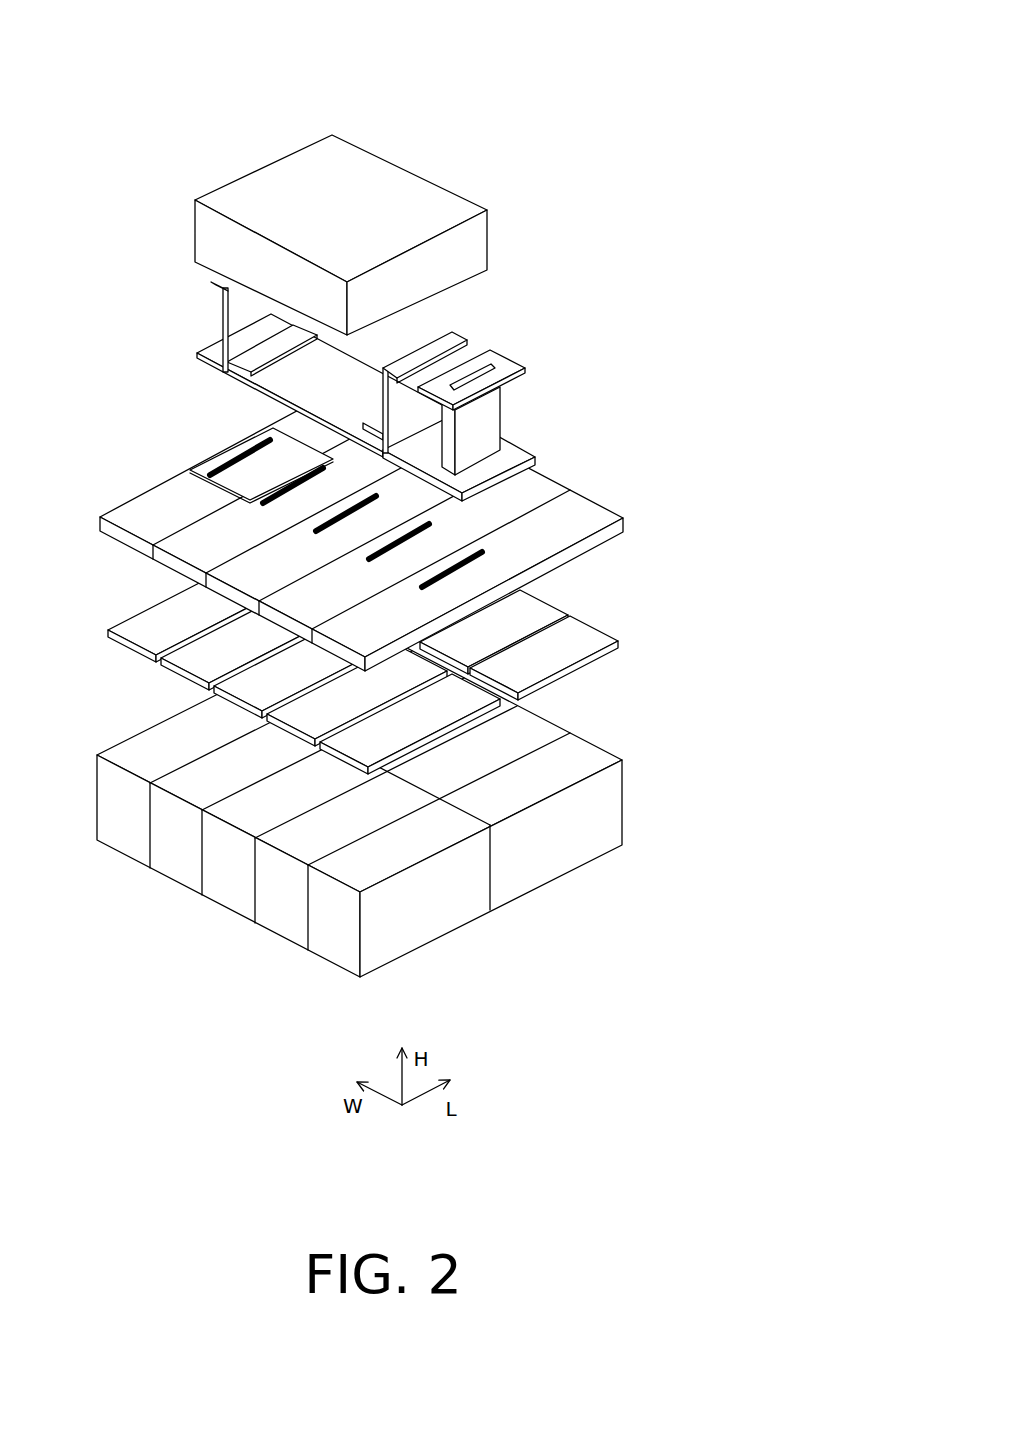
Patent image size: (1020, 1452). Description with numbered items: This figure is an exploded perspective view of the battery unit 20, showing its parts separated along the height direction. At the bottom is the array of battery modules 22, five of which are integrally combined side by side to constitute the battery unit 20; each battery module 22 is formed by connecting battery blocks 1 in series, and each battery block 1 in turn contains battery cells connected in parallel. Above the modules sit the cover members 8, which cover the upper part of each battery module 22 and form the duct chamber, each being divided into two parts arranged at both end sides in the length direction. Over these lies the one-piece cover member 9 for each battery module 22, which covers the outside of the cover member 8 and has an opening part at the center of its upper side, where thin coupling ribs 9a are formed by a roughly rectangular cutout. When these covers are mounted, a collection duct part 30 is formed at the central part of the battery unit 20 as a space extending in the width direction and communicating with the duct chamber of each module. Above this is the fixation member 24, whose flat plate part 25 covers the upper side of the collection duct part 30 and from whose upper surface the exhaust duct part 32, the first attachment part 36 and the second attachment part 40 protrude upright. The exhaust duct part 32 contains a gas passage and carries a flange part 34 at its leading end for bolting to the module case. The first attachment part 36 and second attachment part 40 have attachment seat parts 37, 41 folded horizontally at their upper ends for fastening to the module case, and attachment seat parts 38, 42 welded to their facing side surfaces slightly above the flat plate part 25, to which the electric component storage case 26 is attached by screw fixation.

The battery block 1 is at (440, 920).
The cover member 8 is at (160, 680).
The cover member 9 is at (120, 538).
The coupling rib 9a is at (233, 468).
The battery unit 20 is at (560, 113).
The battery module 22 is at (113, 850).
The fixation member 24 is at (525, 438).
The flat plate part 25 is at (277, 403).
The electric component storage case 26 is at (383, 155).
The collection duct part 30 is at (237, 478).
The exhaust duct part 32 is at (502, 403).
The flange part 34 is at (502, 350).
The first attachment part 36 is at (403, 352).
The attachment seat part 37 is at (460, 332).
The attachment seat part 38 is at (373, 417).
The second attachment part 40 is at (222, 325).
The attachment seat part 41 is at (217, 285).
The attachment seat part 42 is at (240, 373).